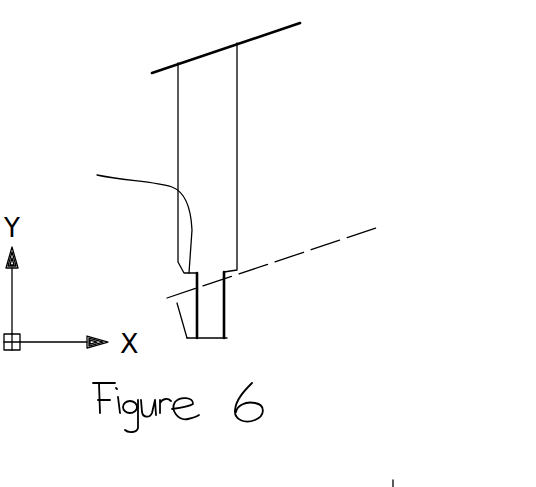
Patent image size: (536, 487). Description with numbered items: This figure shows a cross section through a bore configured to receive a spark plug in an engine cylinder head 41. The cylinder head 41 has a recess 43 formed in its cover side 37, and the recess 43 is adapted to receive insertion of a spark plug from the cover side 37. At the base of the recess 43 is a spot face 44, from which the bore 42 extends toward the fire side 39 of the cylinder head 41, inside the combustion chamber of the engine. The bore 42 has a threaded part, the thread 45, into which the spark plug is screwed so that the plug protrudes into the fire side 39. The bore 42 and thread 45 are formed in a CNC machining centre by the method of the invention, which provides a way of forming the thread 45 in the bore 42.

The cover side 37 is at (158, 68).
The fire side 39 is at (187, 338).
The engine cylinder head 41 is at (285, 154).
The bore 42 is at (227, 338).
The recess 43 is at (237, 110).
The spot face 44 is at (73, 148).
The thread 45 is at (227, 330).